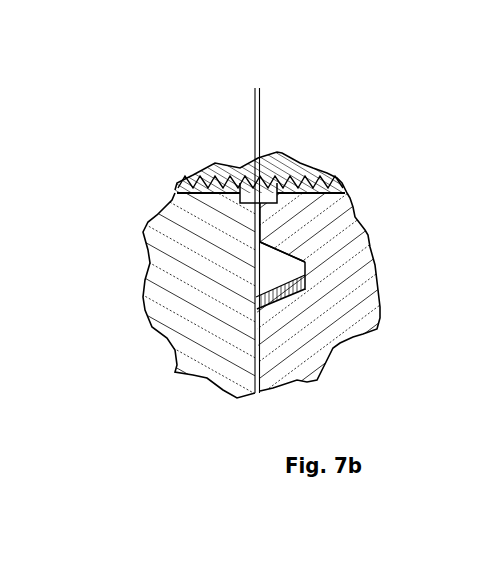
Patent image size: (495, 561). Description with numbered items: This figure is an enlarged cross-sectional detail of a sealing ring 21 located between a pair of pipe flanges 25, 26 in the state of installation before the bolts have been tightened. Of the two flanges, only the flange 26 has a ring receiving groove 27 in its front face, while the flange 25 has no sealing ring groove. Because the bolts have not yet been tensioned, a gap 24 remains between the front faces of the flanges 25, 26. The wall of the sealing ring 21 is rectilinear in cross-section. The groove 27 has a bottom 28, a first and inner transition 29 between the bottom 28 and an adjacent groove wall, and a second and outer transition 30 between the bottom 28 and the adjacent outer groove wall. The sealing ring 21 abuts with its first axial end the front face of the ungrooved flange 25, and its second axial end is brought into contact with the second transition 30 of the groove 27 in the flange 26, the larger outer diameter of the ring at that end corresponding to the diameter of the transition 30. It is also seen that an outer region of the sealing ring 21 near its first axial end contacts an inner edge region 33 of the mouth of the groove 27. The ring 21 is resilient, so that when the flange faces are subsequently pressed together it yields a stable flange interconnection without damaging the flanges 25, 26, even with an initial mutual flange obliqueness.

The sealing ring 21 is at (337, 331).
The gap 24 is at (247, 98).
The flange 25 is at (188, 223).
The flange 26 is at (342, 192).
The groove 27 is at (300, 228).
The bottom 28 is at (306, 276).
The first and inner transition 29 is at (305, 290).
The second and outer transition 30 is at (275, 265).
The inner edge region 33 is at (304, 350).